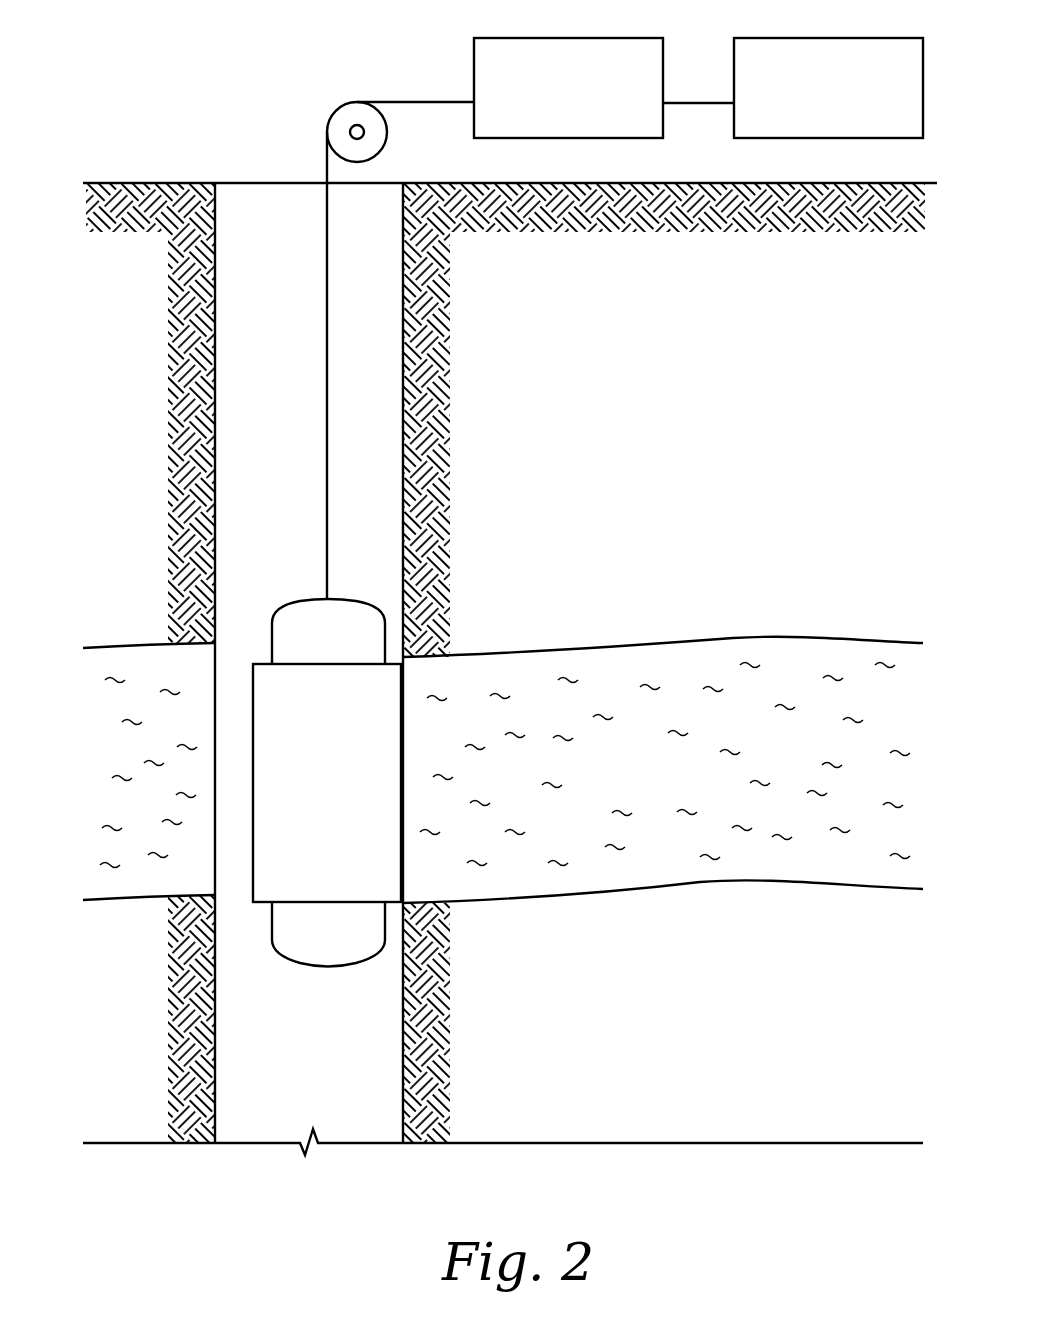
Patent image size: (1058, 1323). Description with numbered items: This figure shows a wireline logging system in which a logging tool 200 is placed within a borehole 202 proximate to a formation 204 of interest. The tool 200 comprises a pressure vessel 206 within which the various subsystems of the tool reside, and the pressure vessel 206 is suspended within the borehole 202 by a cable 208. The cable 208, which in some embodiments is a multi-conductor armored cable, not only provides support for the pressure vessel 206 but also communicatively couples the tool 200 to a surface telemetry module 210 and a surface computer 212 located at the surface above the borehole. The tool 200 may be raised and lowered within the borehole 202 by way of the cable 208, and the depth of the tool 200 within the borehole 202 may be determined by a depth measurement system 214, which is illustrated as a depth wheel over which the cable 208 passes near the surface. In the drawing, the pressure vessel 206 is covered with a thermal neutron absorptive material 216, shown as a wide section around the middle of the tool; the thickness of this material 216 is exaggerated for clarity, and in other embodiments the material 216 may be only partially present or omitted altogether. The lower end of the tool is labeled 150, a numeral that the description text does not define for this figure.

The sensor / bottom section of downhole tool 150 is at (327, 968).
The logging tool 200 is at (326, 765).
The borehole 202 is at (262, 208).
The formation 204 is at (511, 770).
The pressure vessel 206 is at (290, 607).
The cable 208 is at (327, 393).
The surface telemetry module 210 is at (583, 38).
The surface computer 212 is at (841, 38).
The depth measurement system 214 is at (387, 133).
The thermal neutron absorptive material 216 is at (327, 783).